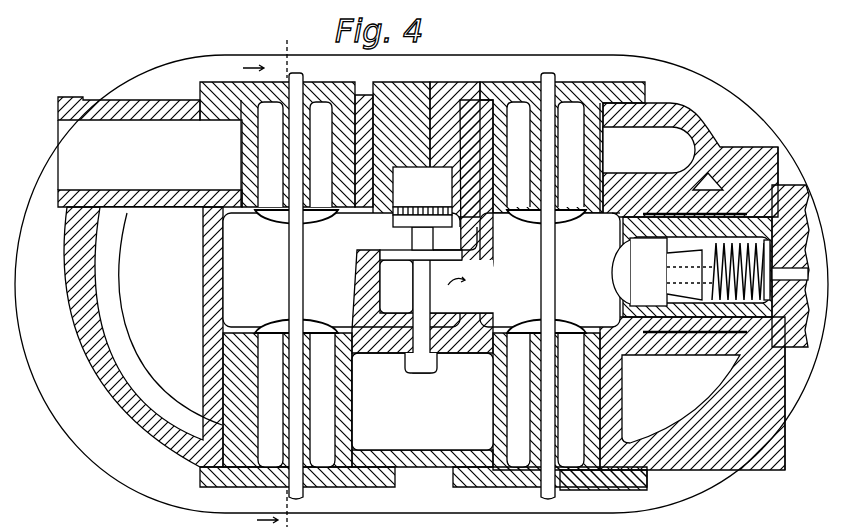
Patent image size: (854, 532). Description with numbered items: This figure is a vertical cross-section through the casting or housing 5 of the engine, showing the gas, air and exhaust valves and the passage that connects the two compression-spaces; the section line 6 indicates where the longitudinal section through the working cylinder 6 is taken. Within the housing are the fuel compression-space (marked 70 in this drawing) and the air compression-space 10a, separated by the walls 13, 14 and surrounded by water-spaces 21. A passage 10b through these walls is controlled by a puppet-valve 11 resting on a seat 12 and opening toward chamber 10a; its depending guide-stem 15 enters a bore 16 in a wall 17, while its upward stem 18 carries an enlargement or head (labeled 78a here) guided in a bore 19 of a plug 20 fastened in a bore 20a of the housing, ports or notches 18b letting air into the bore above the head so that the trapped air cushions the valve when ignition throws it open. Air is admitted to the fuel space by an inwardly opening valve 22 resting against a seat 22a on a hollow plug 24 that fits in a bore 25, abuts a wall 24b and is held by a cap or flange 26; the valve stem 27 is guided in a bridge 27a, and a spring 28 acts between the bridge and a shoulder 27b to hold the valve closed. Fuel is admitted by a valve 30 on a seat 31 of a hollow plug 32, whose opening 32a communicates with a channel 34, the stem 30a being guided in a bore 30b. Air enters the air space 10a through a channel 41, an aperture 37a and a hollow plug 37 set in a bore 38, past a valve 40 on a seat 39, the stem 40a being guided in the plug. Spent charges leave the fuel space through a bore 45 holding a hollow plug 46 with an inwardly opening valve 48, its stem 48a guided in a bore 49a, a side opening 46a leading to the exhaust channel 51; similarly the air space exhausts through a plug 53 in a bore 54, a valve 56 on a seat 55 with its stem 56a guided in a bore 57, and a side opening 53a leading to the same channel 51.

The casting or housing 5 is at (140, 427).
The cylinder 6 is at (271, 280).
The compression chamber 10a is at (350, 270).
The passage 10b is at (396, 286).
The puppet-valve 11 is at (455, 238).
The seat 12 is at (353, 249).
The wall 13 is at (358, 265).
The wall 14 is at (488, 235).
The guide-stem 15 is at (413, 293).
The bore 16 is at (423, 373).
The wall 17 is at (450, 320).
The stem 18 is at (422, 238).
The ports or notches 18b is at (422, 203).
The bore 19 is at (422, 187).
The plug 20 is at (401, 149).
The bore 20a is at (438, 149).
The water-spaces 21 is at (128, 368).
The valve 22 is at (613, 295).
The seat 22a is at (620, 232).
The hollow plug 24 is at (642, 357).
The wall 24b is at (650, 183).
The bore 25 is at (695, 296).
The cap or flange 26 is at (797, 172).
The stem 27 is at (640, 278).
The bridge 27a is at (683, 263).
The projection or shoulder 27b is at (768, 298).
The spring 28 is at (739, 268).
The valve 30 is at (550, 270).
The stem 30a is at (540, 190).
The bore 30b is at (570, 87).
The seat 31 is at (565, 196).
The hollow plug 32 is at (510, 86).
The opening 32a is at (588, 135).
The channel 34 is at (690, 160).
The hollow plug 37 is at (373, 82).
The aperture 37a is at (247, 145).
The bore 38 is at (390, 133).
The seat 39 is at (257, 210).
The air-valve 40 is at (315, 196).
The stem 40a is at (316, 89).
The channel 41 is at (150, 152).
The bore 45 is at (603, 490).
The hollow plug 46 is at (550, 489).
The opening 46a is at (502, 425).
The valve 48 is at (543, 323).
The stem 48a is at (547, 362).
The pocket 49a is at (548, 407).
The channel 51 is at (422, 401).
The plug 53 is at (346, 480).
The opening 53a is at (340, 410).
The bore 54 is at (240, 373).
The seat 55 is at (241, 301).
The valve 56 is at (313, 313).
The stem 56a is at (306, 356).
The bore 57 is at (290, 428).
The chamber 70 is at (571, 261).
The port 78a is at (329, 236).